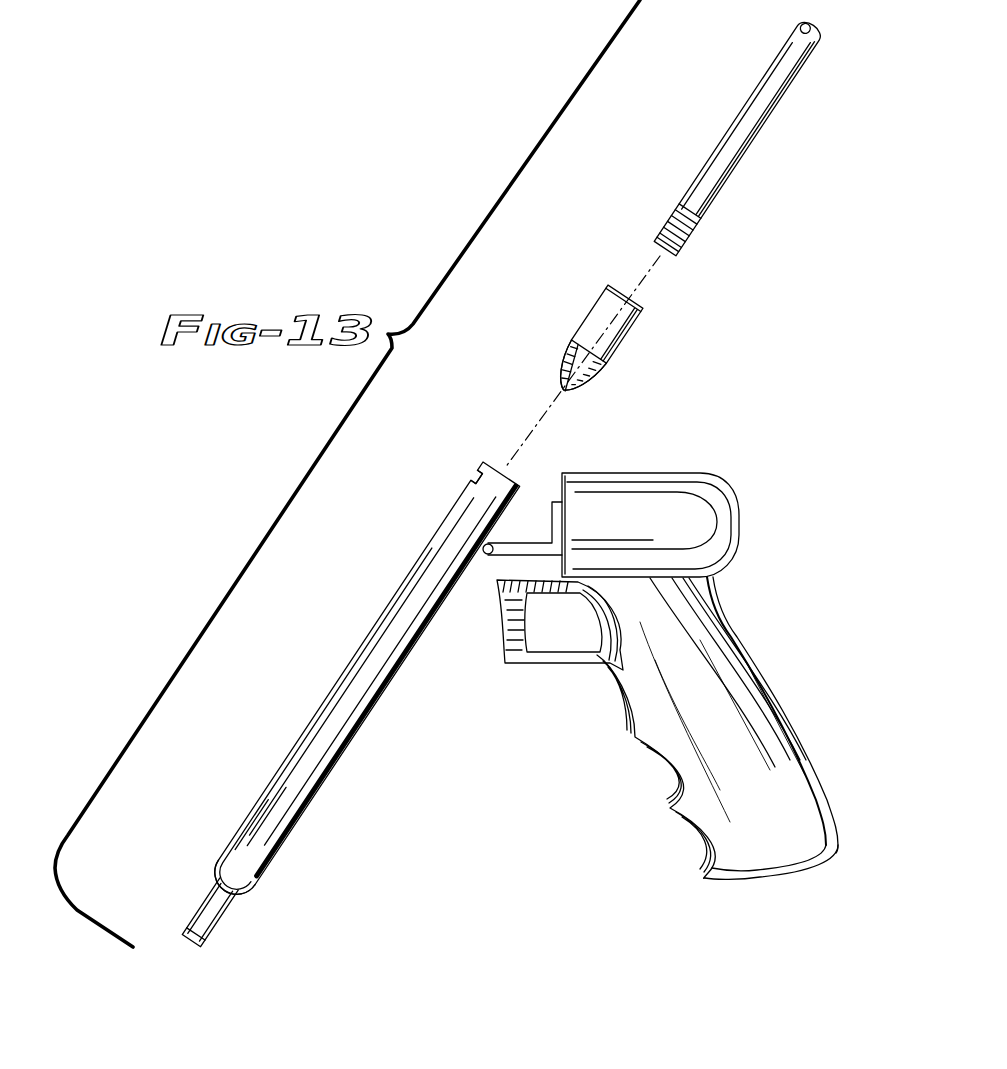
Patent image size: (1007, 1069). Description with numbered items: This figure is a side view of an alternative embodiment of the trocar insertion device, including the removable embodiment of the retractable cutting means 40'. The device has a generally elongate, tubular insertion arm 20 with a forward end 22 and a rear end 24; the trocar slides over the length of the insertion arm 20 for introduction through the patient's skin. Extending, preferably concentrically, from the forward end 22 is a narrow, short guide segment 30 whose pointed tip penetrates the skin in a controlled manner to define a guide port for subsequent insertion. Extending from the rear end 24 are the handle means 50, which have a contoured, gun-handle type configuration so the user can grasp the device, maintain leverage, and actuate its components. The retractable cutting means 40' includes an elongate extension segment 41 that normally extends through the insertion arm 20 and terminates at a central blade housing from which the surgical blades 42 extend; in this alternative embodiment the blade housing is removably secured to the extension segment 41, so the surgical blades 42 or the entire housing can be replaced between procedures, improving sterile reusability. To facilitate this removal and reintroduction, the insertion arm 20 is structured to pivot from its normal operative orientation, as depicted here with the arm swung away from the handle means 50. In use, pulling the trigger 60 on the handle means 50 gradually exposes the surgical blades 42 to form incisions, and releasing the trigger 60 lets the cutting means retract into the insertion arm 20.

The insertion arm 20 is at (338, 672).
The forward end 22 is at (243, 855).
The rear end 24 is at (488, 492).
The guide segment 30 is at (228, 932).
The retractable cutting means 40' is at (641, 343).
The elongate extension segment 41 is at (743, 143).
The surgical blades 42 is at (562, 367).
The handle means 50 is at (770, 657).
The trigger 60 is at (522, 660).